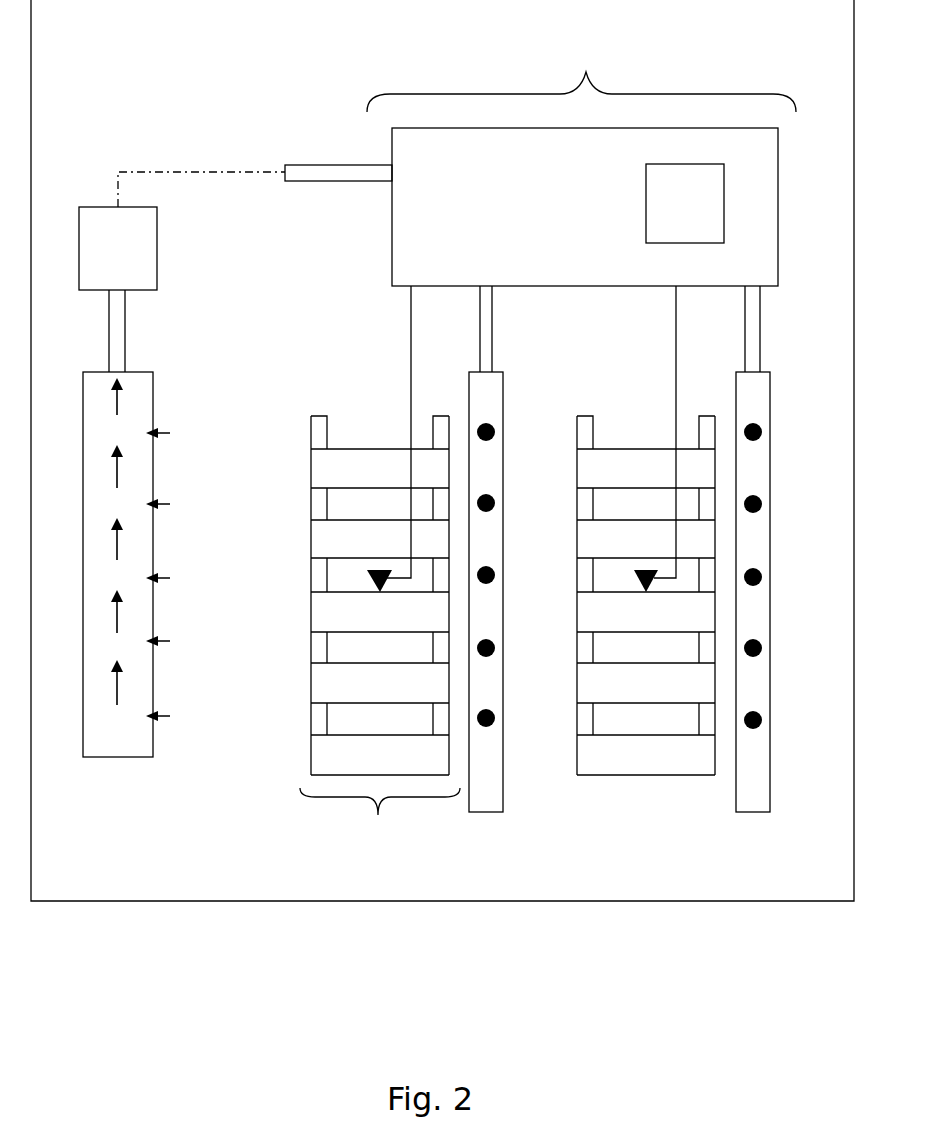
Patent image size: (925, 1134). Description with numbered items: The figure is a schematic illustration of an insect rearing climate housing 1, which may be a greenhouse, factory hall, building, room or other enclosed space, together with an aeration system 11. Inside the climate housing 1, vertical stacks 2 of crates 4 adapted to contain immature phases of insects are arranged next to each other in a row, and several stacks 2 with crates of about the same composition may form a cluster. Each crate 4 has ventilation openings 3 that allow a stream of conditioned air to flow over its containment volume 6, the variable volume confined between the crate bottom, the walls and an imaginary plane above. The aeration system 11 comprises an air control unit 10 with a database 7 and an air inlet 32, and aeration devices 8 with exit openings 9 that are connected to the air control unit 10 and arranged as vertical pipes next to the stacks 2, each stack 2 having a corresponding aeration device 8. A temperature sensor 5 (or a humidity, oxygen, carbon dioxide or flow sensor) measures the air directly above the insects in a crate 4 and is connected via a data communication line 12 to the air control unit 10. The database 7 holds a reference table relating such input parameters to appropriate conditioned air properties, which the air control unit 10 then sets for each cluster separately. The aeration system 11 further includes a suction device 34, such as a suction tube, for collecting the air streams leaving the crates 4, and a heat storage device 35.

The insect rearing climate housing 1 is at (442, 450).
The stack 2 is at (507, 640).
The ventilation opening 3 is at (347, 503).
The crate 4 is at (326, 684).
The temperature sensor 5 is at (645, 578).
The containment volume 6 is at (645, 684).
The database 7 is at (685, 203).
The aeration device 8 is at (486, 394).
The exit opening 9 is at (497, 503).
The air control unit 10 is at (585, 207).
The aeration system 11 is at (581, 64).
The data communication line 12 is at (411, 350).
The air inlet 32 is at (338, 159).
The suction device 34 is at (138, 523).
The heat storage device 35 is at (118, 248).